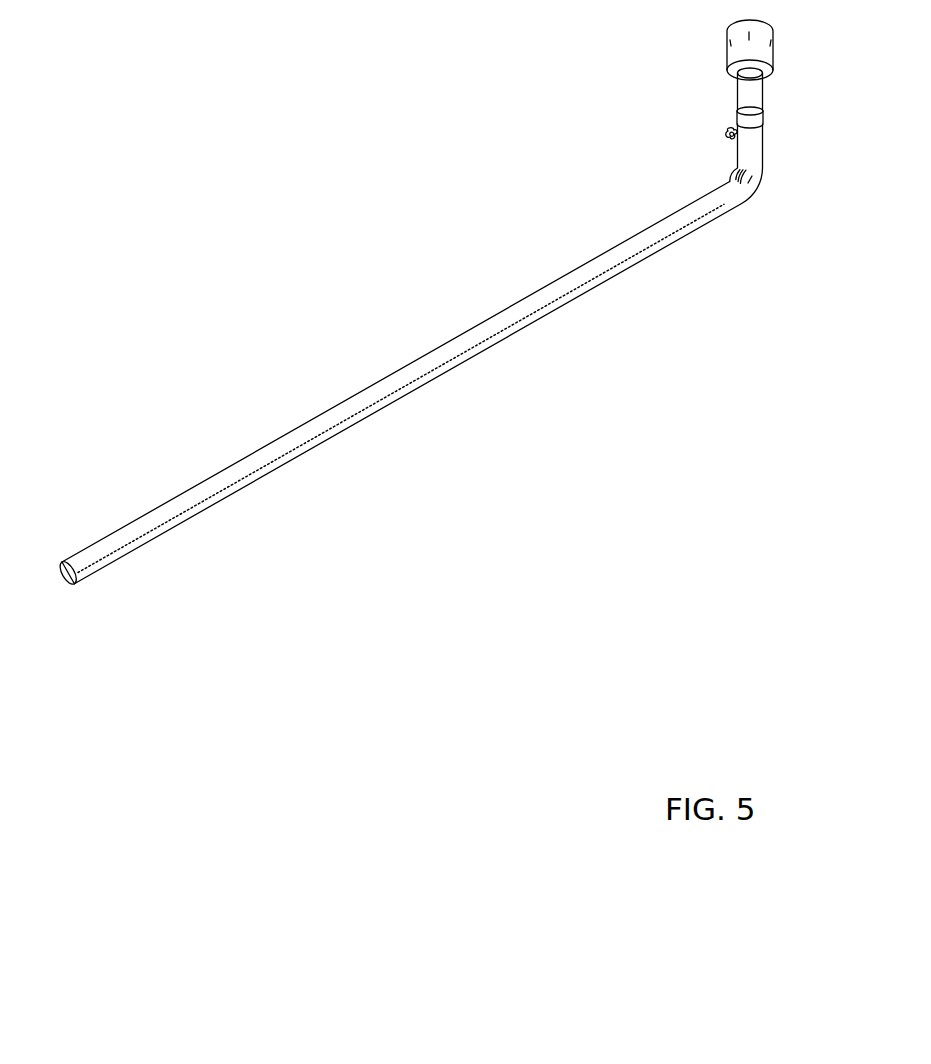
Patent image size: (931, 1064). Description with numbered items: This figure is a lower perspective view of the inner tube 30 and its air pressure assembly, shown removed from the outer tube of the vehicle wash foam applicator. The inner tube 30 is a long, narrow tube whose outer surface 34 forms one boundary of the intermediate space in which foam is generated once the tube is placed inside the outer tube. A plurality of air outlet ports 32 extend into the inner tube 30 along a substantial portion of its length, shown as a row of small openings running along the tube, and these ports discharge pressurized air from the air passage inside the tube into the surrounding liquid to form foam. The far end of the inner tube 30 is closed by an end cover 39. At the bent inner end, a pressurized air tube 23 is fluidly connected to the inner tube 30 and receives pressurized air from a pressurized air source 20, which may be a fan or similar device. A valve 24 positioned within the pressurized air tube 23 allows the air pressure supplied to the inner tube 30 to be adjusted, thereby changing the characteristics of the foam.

The pressurized air source 20 is at (727, 50).
The pressurized air tube 23 is at (745, 88).
The valve 24 is at (728, 133).
The inner tube 30 is at (450, 337).
The air outlet port 32 is at (265, 472).
The outer surface 34 is at (387, 387).
The end cover 39 is at (65, 590).